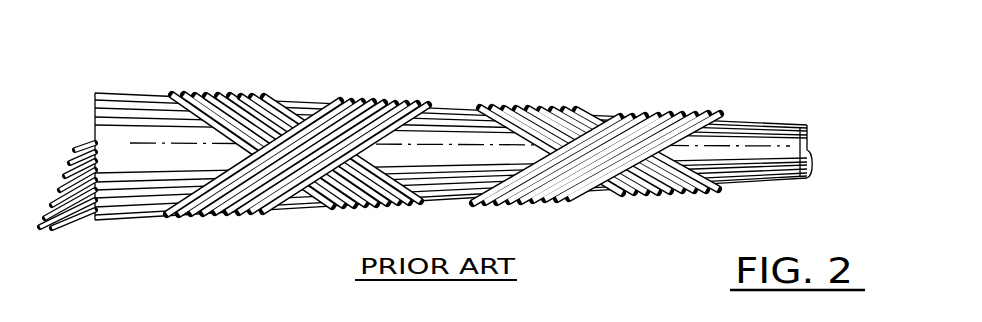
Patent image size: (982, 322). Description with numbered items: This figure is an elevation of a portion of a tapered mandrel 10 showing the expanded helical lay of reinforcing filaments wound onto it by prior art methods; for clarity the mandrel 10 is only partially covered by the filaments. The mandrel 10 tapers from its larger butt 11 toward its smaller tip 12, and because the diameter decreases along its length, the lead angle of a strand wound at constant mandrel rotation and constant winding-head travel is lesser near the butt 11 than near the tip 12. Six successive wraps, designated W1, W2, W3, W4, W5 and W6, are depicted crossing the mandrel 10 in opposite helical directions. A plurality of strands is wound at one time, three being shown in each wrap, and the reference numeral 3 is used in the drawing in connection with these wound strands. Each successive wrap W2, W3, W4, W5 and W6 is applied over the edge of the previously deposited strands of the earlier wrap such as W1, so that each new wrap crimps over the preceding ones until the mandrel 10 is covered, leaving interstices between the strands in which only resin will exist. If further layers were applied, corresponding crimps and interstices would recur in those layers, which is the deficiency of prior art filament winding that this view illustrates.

The tapered mandrel 10 is at (452, 143).
The butt 11 is at (123, 108).
The tip 12 is at (778, 178).
The braid strands 3 is at (433, 153).
The first wrap W1 is at (197, 227).
The second wrap W2 is at (195, 90).
The third wrap W3 is at (233, 236).
The fourth wrap W4 is at (235, 80).
The fifth wrap W5 is at (278, 227).
The sixth wrap W6 is at (272, 90).